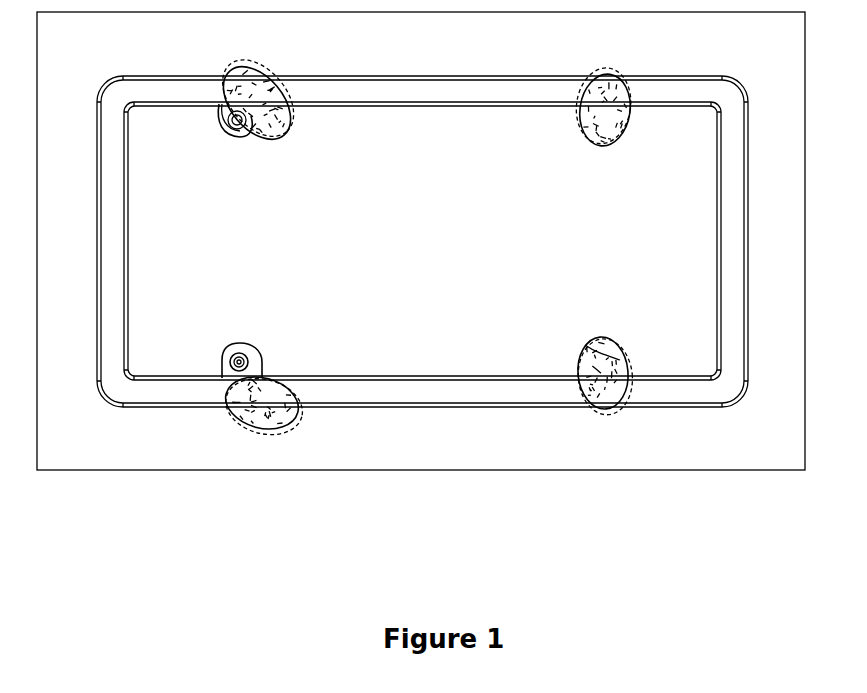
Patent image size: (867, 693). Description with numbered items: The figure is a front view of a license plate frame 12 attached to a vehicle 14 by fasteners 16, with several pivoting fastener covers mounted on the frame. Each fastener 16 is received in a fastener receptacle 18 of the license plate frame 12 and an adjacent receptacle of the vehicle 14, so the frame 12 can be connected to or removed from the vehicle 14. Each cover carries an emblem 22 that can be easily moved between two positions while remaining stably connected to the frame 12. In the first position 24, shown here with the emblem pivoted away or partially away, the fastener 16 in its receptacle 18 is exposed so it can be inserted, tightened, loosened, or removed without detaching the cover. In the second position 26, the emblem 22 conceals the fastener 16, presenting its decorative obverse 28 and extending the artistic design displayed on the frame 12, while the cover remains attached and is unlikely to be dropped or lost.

The license plate frame 12 is at (413, 407).
The vehicle 14 is at (112, 472).
The fastener 16 is at (226, 135).
The fastener receptacle 18 is at (250, 135).
The emblem 22 is at (592, 128).
The first position 24 is at (233, 420).
The second position 26 is at (580, 422).
The obverse 28 is at (622, 365).